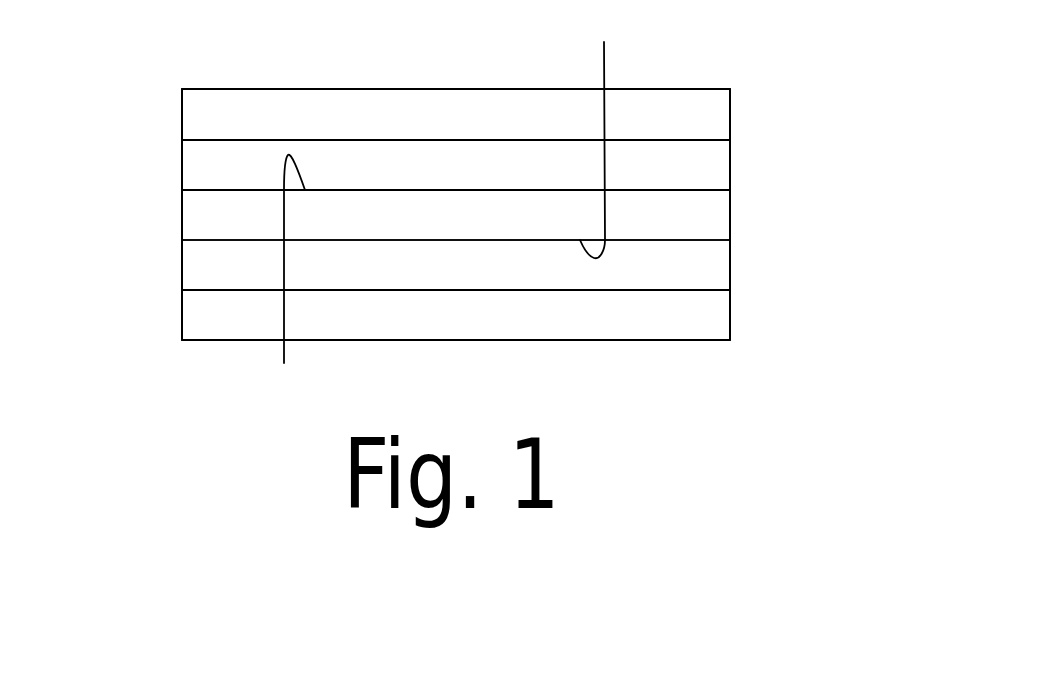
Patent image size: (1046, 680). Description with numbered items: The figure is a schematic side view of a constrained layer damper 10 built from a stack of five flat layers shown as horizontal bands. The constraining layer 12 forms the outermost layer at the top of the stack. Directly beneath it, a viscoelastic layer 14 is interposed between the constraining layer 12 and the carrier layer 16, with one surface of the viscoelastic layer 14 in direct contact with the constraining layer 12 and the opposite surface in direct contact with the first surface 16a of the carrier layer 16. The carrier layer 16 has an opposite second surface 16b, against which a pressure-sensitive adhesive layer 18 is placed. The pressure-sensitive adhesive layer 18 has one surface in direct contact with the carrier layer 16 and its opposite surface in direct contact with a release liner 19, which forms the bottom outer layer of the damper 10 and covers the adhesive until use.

The constrained layer damper 10 is at (762, 74).
The constraining layer 12 is at (207, 107).
The viscoelastic layer 14 is at (705, 159).
The carrier layer 16 is at (207, 210).
The first surface 16a is at (280, 281).
The second surface 16b is at (597, 131).
The pressure-sensitive adhesive layer 18 is at (705, 258).
The release liner 19 is at (207, 310).